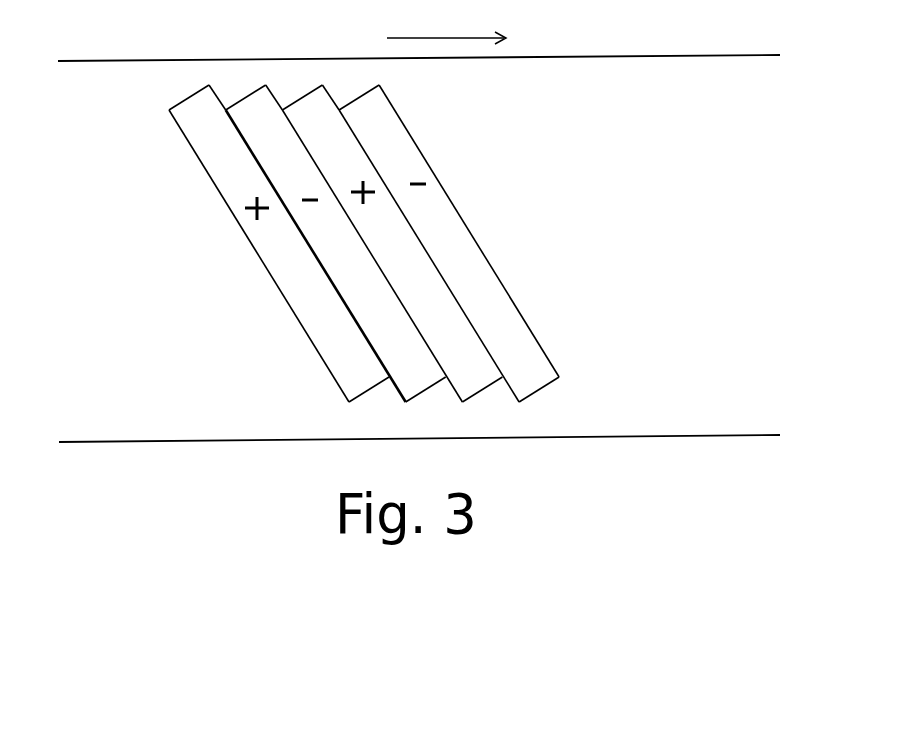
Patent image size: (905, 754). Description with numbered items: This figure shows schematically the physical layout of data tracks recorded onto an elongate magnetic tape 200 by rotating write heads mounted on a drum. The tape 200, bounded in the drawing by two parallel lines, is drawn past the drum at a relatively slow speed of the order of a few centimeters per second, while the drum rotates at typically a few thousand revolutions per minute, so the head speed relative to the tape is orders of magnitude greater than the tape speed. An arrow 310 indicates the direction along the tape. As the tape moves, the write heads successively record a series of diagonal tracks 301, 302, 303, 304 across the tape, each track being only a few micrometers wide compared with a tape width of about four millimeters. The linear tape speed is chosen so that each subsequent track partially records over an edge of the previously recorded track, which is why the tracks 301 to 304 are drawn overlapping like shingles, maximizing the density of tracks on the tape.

The elongate magnetic tape 200 is at (560, 58).
The direction of movement 310 is at (446, 23).
The diagonal track 301 is at (288, 292).
The diagonal track 302 is at (415, 378).
The diagonal track 303 is at (468, 380).
The diagonal track 304 is at (490, 285).